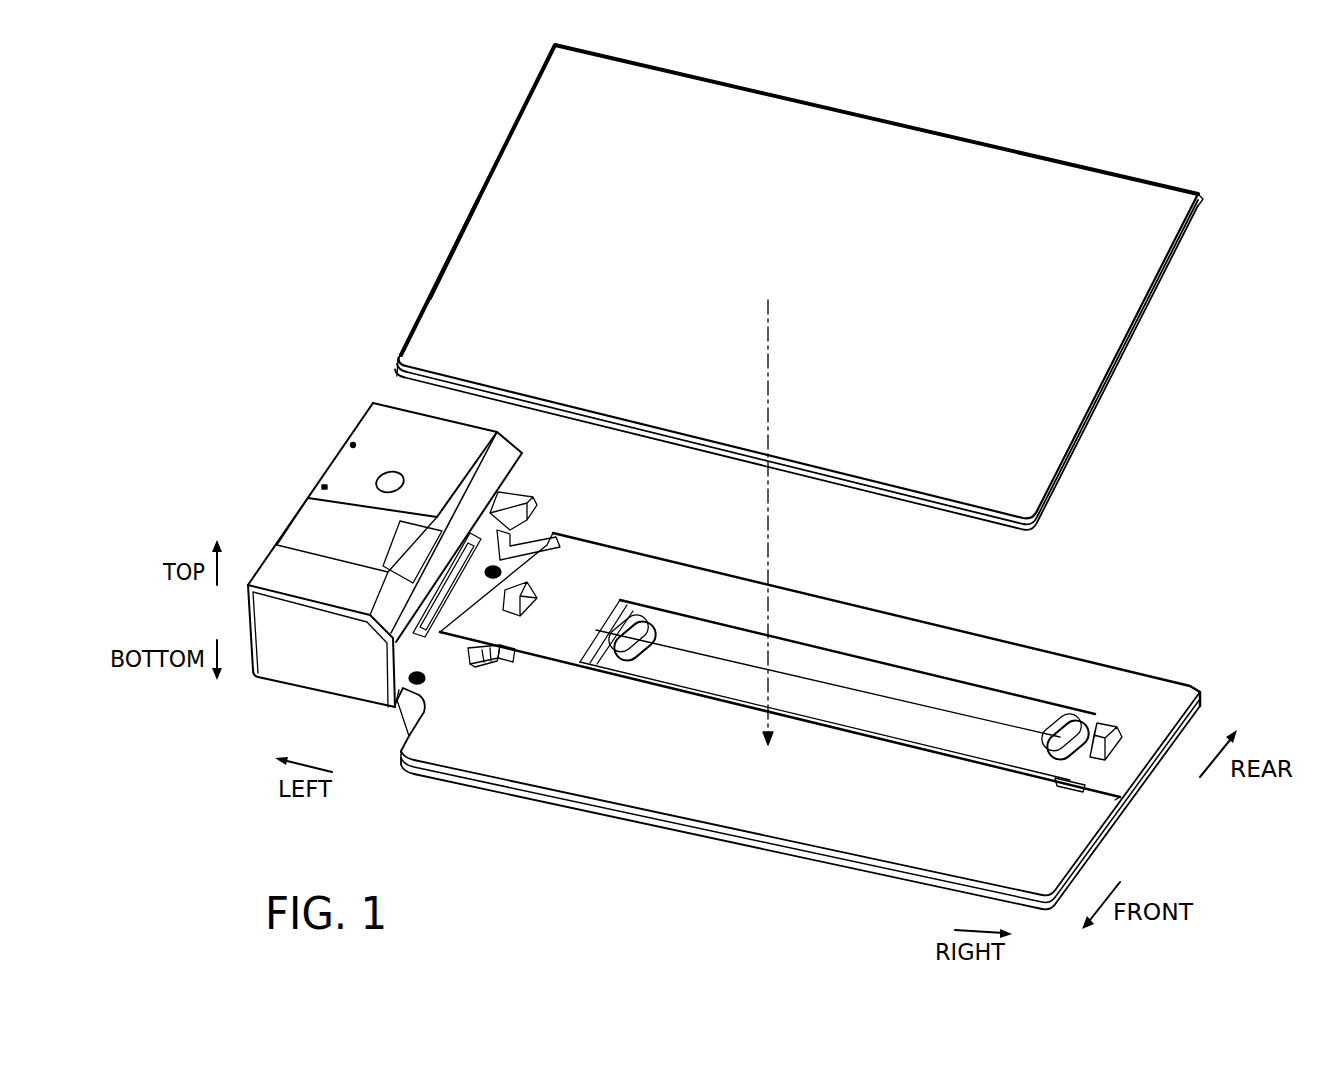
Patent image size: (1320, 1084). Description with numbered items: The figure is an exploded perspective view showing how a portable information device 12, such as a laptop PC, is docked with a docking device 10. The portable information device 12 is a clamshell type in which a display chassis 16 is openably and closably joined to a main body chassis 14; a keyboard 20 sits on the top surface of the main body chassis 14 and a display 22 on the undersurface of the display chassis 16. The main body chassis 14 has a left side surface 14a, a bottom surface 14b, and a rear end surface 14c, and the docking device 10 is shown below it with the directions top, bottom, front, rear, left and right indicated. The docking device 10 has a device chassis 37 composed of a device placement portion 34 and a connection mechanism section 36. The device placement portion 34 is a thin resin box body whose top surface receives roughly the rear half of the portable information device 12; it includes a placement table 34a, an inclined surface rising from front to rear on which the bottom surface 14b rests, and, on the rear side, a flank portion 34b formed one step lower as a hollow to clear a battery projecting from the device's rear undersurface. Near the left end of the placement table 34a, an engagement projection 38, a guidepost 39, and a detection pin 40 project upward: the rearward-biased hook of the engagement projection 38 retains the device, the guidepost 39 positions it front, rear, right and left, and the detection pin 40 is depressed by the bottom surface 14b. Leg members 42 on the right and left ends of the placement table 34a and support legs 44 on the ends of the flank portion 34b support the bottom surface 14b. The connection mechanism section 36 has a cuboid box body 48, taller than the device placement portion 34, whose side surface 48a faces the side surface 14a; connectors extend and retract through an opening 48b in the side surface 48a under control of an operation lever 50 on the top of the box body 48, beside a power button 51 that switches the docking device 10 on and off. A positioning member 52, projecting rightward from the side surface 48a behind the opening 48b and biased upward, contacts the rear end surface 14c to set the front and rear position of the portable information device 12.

The docking device 10 is at (1072, 629).
The portable information device 12 is at (1183, 338).
The main body chassis 14 is at (1073, 466).
The side surface 14a is at (490, 174).
The bottom surface 14b is at (1181, 246).
The rear end surface 14c is at (1202, 195).
The display chassis 16 is at (1045, 422).
The keyboard 20 is at (892, 147).
The display 22 is at (799, 200).
The device placement portion 34 is at (685, 854).
The placement table 34a is at (797, 832).
The flank portion 34b is at (941, 633).
The connection mechanism section 36 is at (300, 668).
The device chassis 37 is at (360, 804).
The engagement projection 38 is at (463, 662).
The guidepost 39 is at (478, 661).
The detection pin 40 is at (497, 659).
The leg members 42 is at (1074, 783).
The support legs 44 is at (516, 578).
The box body 48 is at (268, 652).
The side surface 48a is at (408, 685).
The opening 48b is at (455, 583).
The operation lever 50 is at (303, 520).
The power button 51 is at (385, 483).
The positioning member 52 is at (518, 500).